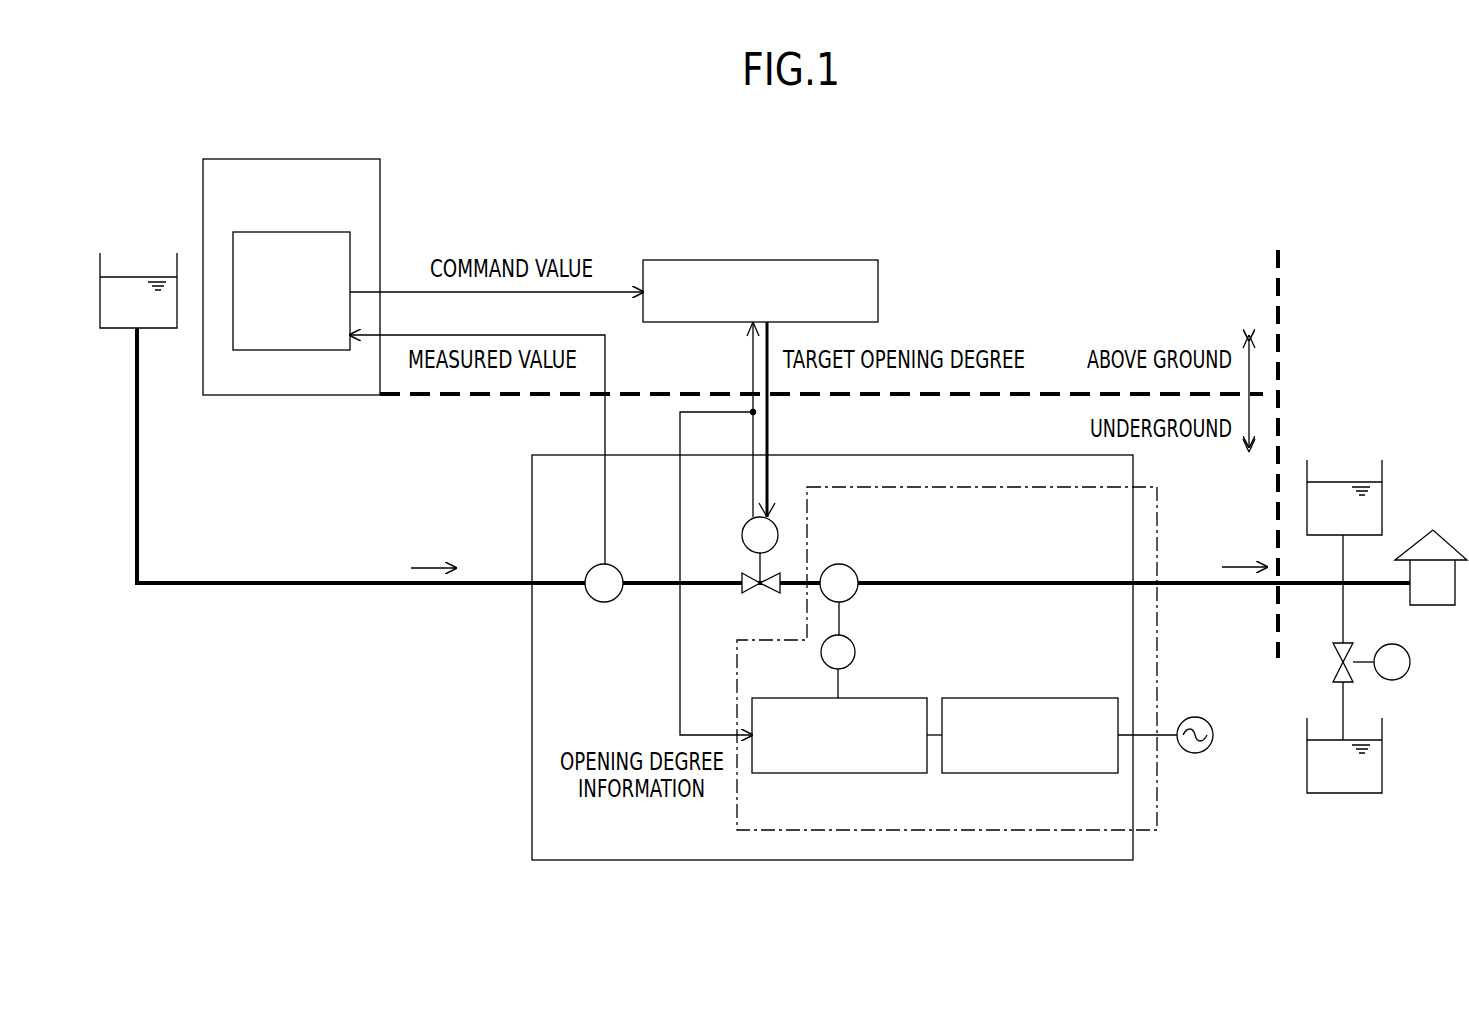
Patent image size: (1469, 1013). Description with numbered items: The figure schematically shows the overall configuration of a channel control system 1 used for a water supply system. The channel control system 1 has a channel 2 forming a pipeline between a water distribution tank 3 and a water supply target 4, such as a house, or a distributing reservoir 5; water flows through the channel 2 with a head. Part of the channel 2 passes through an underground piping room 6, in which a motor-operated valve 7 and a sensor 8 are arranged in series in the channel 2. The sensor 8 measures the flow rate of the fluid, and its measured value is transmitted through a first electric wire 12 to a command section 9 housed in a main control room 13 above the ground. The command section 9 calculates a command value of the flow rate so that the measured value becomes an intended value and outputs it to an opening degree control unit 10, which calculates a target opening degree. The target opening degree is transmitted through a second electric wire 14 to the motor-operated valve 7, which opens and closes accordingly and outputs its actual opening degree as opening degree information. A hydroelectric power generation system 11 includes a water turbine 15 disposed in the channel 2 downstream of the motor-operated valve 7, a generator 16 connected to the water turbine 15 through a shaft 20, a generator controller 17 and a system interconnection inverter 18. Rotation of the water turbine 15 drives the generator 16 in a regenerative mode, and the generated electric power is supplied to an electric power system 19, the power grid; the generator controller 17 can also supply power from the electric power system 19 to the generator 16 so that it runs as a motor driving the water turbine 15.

The channel control system 1 is at (608, 210).
The channel 2 is at (345, 586).
The water distribution tank 3 is at (165, 330).
The water supply target 4 is at (1440, 530).
The distributing reservoir 5 is at (1382, 495).
The underground piping room 6 is at (978, 455).
The motor-operated valve 7 is at (746, 577).
The sensor 8 is at (617, 568).
The command section 9 is at (295, 232).
The opening degree control unit 10 is at (828, 260).
The hydroelectric power generation system 11 is at (735, 816).
The first electric wire 12 is at (538, 335).
The main control room 13 is at (328, 159).
The second electric wire 14 is at (770, 425).
The water turbine 15 is at (852, 567).
The generator 16 is at (857, 650).
The generator controller 17 is at (873, 698).
The system interconnection inverter 18 is at (1063, 698).
The electric power system 19 is at (1195, 715).
The shaft 20 is at (845, 615).